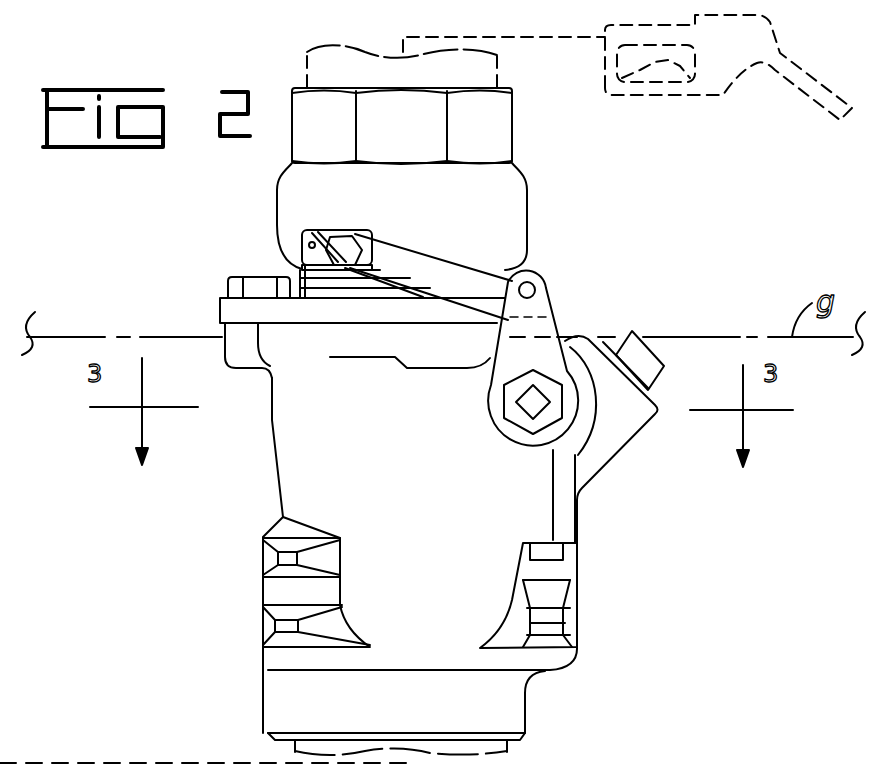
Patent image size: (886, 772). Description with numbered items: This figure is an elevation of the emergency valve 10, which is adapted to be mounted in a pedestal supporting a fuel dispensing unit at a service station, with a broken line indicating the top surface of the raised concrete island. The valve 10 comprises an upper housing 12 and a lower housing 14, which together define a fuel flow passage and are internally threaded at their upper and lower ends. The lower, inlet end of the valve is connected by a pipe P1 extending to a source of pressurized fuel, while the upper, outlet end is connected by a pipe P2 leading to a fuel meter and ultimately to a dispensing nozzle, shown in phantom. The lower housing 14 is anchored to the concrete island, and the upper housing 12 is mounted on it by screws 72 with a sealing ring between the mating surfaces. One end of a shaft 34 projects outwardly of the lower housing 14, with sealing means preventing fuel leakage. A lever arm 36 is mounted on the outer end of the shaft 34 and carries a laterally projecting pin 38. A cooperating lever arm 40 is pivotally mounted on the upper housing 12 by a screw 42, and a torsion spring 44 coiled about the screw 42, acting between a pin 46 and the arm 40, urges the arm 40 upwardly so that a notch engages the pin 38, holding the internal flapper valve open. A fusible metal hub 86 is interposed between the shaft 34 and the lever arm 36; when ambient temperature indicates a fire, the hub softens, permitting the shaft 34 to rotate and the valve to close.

The emergency valve 10 is at (219, 216).
The upper housing 12 is at (530, 190).
The lower housing 14 is at (577, 538).
The shaft 34 is at (537, 447).
The lever arm 36 is at (553, 322).
The pin 38 is at (541, 286).
The lever arm 40 is at (443, 261).
The screw 42 is at (372, 240).
The torsion spring 44 is at (330, 232).
The pin 46 is at (298, 266).
The screws 72 is at (227, 290).
The fusible metal hub 86 is at (500, 402).
The pipe P1 is at (60, 762).
The pipe P2 is at (497, 60).